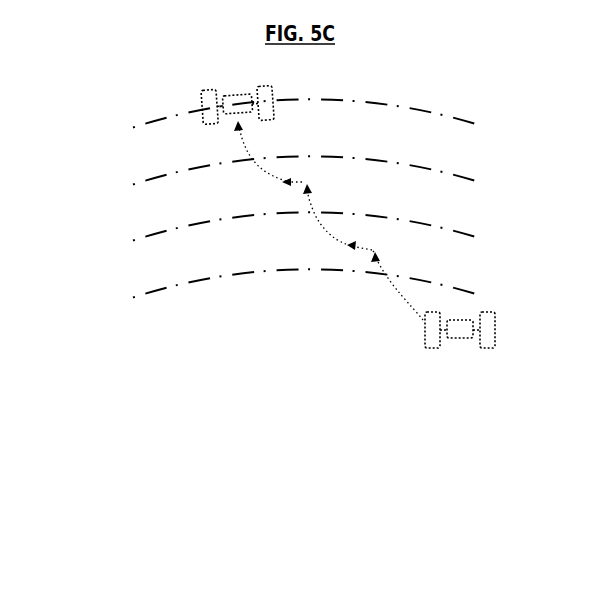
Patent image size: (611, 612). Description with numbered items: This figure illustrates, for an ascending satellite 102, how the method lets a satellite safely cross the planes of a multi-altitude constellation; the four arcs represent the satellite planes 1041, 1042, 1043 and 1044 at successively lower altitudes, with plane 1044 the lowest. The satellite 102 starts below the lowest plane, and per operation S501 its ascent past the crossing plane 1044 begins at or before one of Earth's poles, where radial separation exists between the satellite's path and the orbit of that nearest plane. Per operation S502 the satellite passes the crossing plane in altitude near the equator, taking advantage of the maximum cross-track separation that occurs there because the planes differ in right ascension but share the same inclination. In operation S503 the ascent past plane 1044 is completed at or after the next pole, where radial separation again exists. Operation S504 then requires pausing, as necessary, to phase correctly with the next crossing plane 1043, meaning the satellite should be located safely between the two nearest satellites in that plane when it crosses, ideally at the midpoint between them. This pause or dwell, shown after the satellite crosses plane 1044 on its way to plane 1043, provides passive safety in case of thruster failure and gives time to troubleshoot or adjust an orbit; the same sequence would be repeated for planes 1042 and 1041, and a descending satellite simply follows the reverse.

The satellite 102 is at (503, 329).
The satellite plane 1041 is at (296, 128).
The satellite plane 1042 is at (297, 186).
The satellite plane 1043 is at (297, 241).
The satellite plane 1044 is at (297, 299).
The operation S501 is at (408, 343).
The operation S502 is at (372, 288).
The operation S503 is at (396, 253).
The operation S504 is at (370, 233).